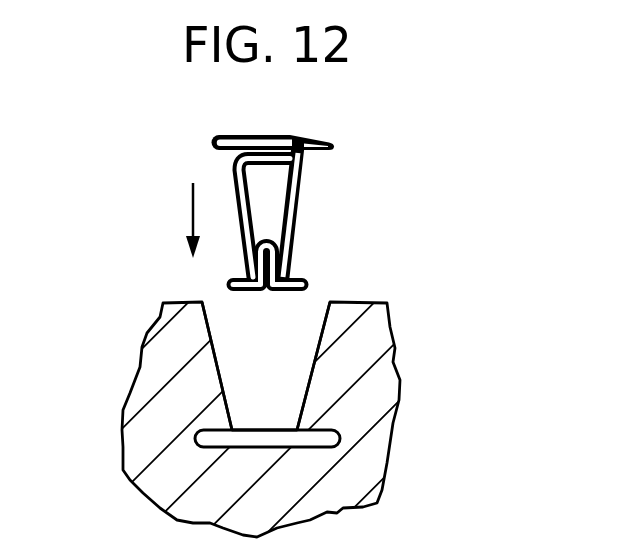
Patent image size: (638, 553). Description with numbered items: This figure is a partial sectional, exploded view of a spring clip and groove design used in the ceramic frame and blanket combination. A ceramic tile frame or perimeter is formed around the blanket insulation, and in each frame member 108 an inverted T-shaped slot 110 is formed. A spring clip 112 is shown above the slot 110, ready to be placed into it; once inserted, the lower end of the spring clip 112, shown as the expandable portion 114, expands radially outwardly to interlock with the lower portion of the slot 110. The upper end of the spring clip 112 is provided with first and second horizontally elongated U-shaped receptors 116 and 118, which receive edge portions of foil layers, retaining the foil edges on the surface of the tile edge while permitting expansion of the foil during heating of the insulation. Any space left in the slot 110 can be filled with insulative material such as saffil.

The frame member 108 is at (410, 361).
The inverted T-shaped slot 110 is at (298, 325).
The spring clip 112 is at (268, 197).
The base portion of clip 114 is at (232, 282).
The first horizontally elongated U-shaped receptor 116 is at (237, 136).
The second horizontally elongated U-shaped receptor 118 is at (238, 167).